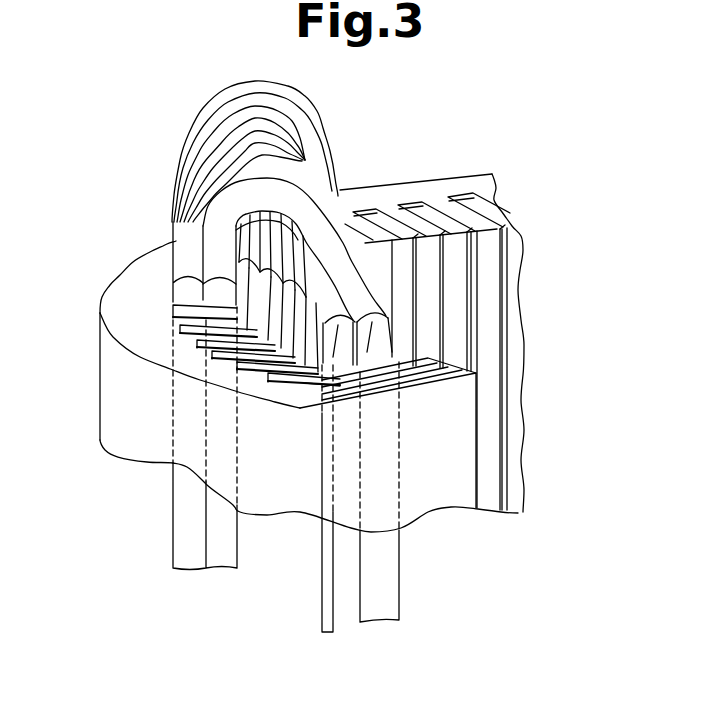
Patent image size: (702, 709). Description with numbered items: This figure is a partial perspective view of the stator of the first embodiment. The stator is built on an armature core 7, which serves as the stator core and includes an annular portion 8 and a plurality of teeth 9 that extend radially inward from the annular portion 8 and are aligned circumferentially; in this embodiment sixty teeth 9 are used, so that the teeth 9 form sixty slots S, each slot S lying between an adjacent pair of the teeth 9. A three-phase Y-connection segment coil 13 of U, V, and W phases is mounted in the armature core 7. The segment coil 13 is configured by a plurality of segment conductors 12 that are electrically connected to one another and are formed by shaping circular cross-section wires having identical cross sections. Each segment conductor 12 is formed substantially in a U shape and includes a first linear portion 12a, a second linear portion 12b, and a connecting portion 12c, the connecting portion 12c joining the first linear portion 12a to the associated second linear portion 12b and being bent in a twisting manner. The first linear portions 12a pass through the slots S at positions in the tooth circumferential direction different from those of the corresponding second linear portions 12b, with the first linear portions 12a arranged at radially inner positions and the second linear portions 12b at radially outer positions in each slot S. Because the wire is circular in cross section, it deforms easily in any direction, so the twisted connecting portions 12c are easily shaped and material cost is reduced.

The armature core 7 is at (100, 358).
The annular portion 8 is at (112, 283).
The teeth 9 is at (374, 360).
The slots S is at (273, 379).
The segment conductors 12 is at (213, 230).
The first linear portions 12a is at (394, 577).
The second linear portions 12b is at (183, 538).
The connecting portions 12c is at (227, 207).
The segment coil 13 is at (180, 124).